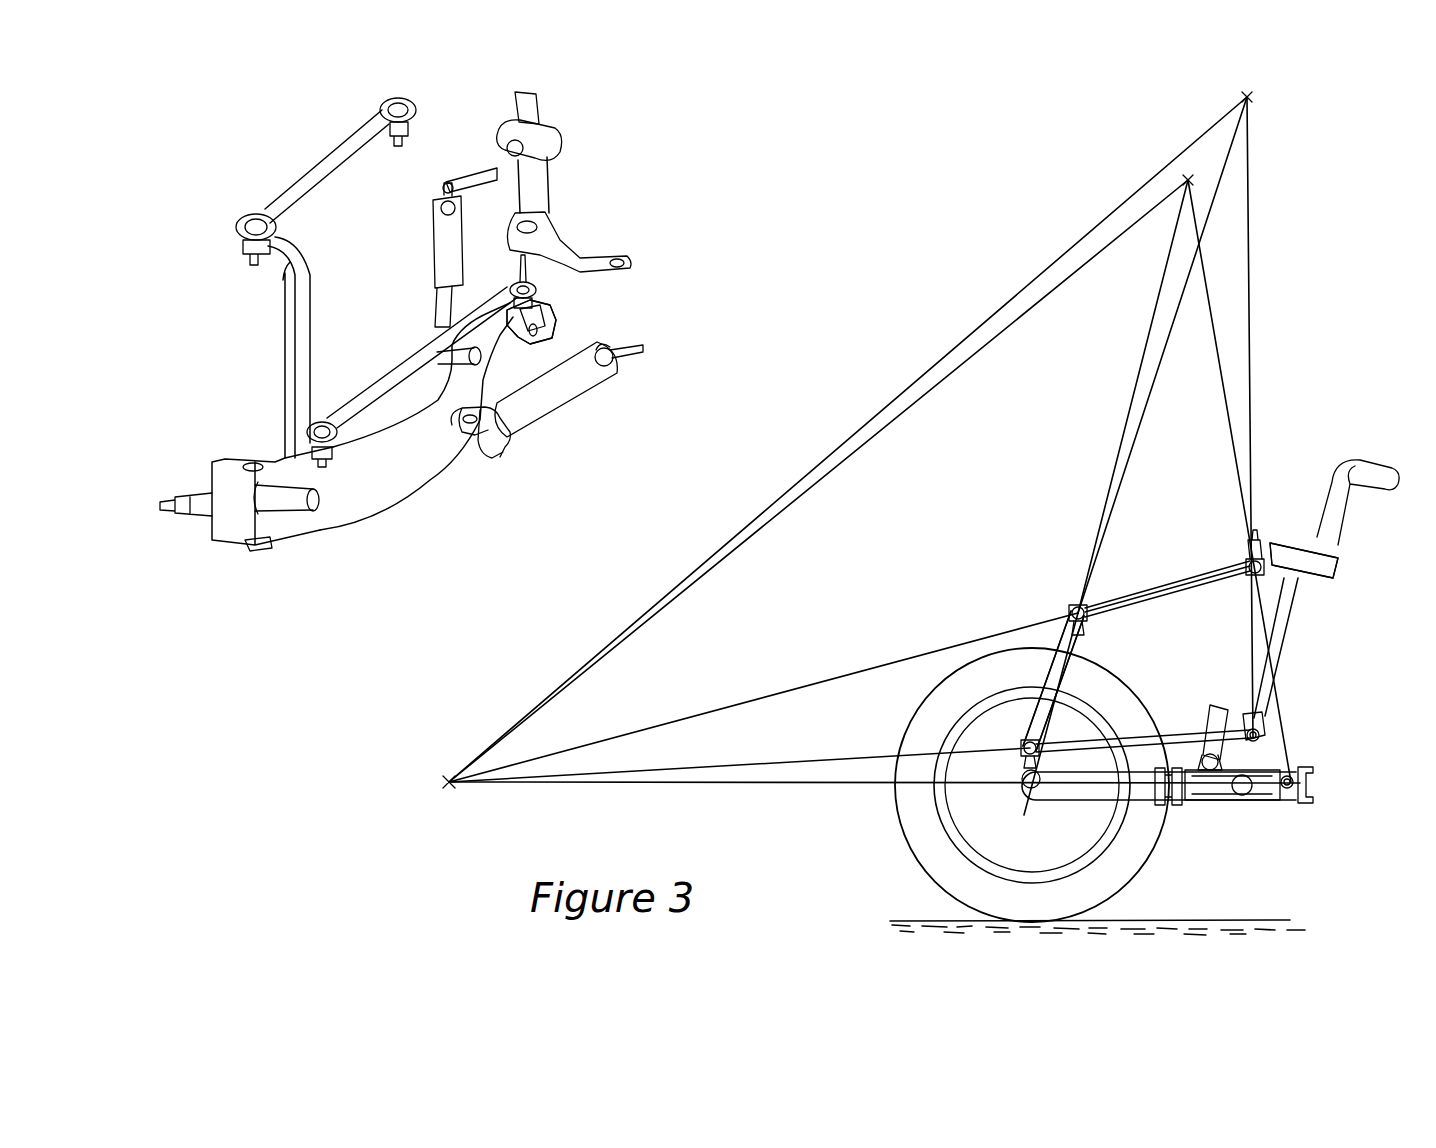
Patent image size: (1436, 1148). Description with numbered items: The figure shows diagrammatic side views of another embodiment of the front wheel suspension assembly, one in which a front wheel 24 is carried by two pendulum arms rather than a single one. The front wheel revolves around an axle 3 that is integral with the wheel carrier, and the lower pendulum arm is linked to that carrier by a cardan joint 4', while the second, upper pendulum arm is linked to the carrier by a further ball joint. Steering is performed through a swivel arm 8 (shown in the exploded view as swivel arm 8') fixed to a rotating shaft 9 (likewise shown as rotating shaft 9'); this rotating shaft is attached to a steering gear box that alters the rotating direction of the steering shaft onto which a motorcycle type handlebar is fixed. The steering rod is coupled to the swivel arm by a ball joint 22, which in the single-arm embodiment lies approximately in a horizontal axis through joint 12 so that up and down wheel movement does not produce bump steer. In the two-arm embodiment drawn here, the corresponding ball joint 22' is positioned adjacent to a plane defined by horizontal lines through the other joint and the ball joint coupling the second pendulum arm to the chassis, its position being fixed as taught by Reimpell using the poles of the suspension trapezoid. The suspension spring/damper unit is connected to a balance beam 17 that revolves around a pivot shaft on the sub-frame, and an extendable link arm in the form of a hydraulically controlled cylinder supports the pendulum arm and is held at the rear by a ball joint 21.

The axle 3 is at (200, 498).
The cardan joint 4' is at (257, 572).
The swivel arm 8 is at (1290, 721).
The swivel arm 8' is at (576, 242).
The rotating shaft 9 is at (1305, 648).
The rotating shaft 9' is at (576, 185).
The joint 12 is at (556, 320).
The balance beam 17 is at (477, 177).
The ball joint 21 is at (630, 350).
The ball joint 22 is at (502, 275).
The ball joint 22' is at (1307, 757).
The front wheel 24 is at (920, 830).